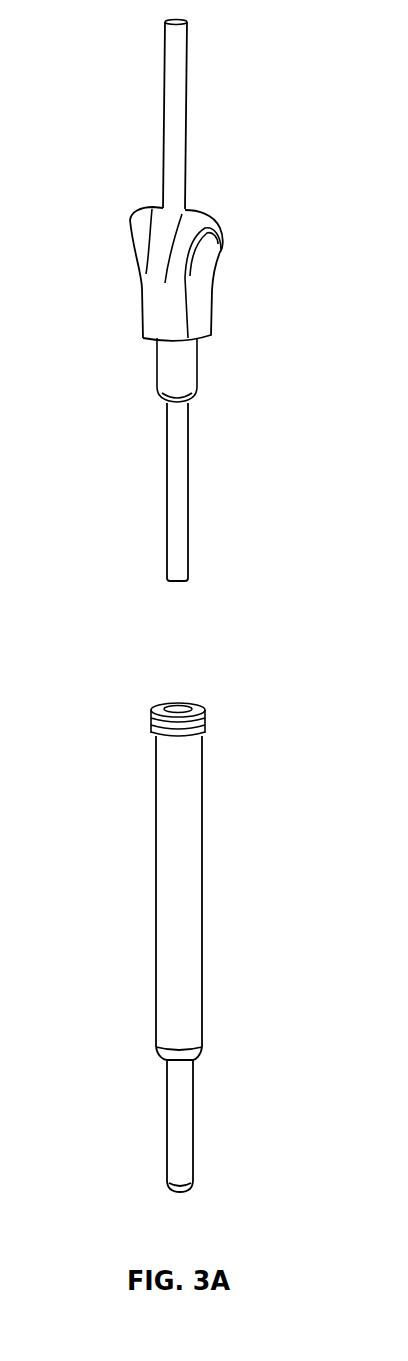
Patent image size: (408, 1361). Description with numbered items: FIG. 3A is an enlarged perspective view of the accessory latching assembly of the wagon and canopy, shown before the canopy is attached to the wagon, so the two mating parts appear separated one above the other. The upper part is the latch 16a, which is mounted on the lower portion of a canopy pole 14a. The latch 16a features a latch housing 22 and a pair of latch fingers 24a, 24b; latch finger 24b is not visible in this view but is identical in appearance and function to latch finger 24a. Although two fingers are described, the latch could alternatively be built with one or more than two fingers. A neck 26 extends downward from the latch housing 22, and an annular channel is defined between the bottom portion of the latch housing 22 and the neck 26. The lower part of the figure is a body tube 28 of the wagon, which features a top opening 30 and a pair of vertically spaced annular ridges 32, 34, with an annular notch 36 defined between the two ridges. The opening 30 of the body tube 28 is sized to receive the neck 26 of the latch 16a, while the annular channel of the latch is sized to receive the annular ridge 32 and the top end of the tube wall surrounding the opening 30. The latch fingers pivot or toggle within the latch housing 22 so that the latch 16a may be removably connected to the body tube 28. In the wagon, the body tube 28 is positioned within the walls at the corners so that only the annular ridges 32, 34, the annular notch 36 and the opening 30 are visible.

The canopy pole 14a is at (185, 125).
The latch 16a is at (127, 193).
The latch housing 22 is at (203, 217).
The latch finger 24a is at (203, 268).
The latch finger 24b is at (140, 282).
The neck 26 is at (190, 360).
The body tube 28 is at (192, 907).
The top opening 30 is at (198, 703).
The annular ridge 32 is at (152, 712).
The annular ridge 34 is at (152, 730).
The annular notch 36 is at (205, 730).